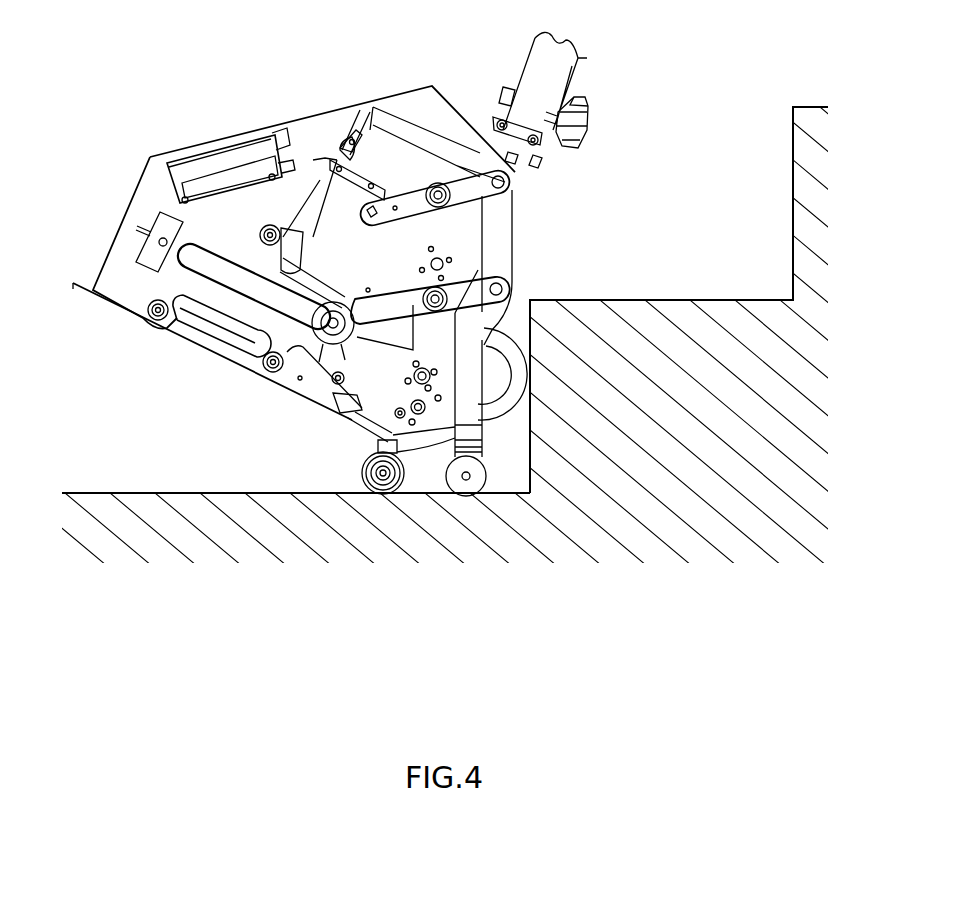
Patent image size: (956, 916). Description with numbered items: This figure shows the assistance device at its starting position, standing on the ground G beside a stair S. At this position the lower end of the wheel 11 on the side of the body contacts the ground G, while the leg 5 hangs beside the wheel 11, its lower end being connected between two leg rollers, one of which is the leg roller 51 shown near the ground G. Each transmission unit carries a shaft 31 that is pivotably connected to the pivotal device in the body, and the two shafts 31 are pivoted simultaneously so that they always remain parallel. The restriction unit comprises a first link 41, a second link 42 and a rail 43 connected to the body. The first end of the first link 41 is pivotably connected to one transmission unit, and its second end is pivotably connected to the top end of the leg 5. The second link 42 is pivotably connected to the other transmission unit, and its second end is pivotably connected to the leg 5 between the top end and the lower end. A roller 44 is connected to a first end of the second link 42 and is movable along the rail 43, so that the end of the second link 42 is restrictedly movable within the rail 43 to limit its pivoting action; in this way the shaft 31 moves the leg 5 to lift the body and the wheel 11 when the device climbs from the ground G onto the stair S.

The shaft 31 is at (356, 162).
The first link 41 is at (488, 196).
The second link 42 is at (490, 280).
The rail 43 is at (237, 308).
The roller 44 is at (327, 341).
The leg 5 is at (473, 406).
The leg wheel 51 is at (474, 486).
The wheel 11 is at (497, 380).
The ground G is at (137, 493).
The stair S is at (716, 300).